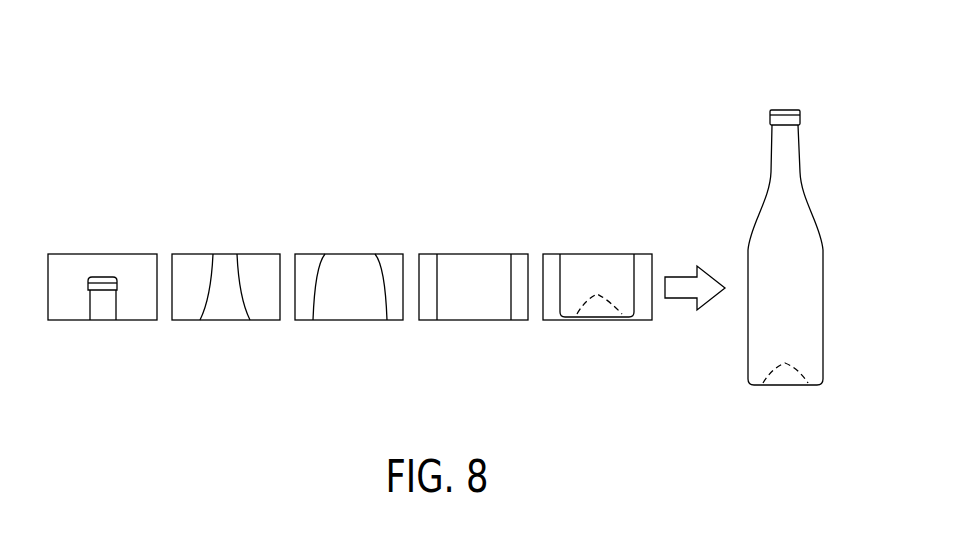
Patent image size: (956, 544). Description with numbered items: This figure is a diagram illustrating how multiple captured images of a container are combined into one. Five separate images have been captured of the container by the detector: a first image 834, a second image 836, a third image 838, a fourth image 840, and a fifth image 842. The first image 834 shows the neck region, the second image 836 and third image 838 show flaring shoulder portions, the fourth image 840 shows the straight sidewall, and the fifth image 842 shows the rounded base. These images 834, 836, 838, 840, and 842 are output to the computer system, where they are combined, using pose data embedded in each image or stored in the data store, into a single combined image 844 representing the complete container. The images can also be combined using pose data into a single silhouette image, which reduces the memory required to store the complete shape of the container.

The first image 834 is at (100, 253).
The second image 836 is at (222, 253).
The third image 838 is at (345, 253).
The fourth image 840 is at (470, 253).
The fifth image 842 is at (592, 253).
The single combined image 844 is at (782, 108).